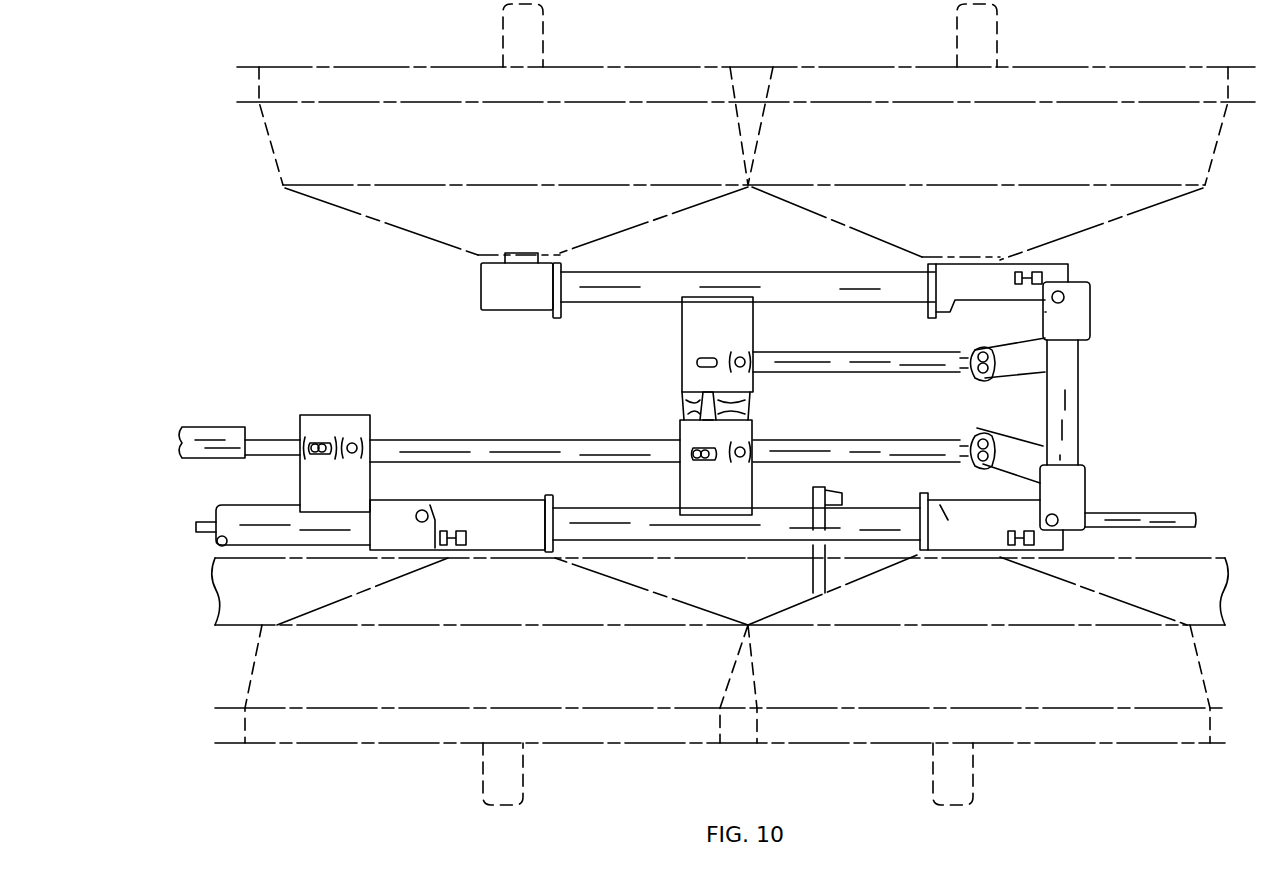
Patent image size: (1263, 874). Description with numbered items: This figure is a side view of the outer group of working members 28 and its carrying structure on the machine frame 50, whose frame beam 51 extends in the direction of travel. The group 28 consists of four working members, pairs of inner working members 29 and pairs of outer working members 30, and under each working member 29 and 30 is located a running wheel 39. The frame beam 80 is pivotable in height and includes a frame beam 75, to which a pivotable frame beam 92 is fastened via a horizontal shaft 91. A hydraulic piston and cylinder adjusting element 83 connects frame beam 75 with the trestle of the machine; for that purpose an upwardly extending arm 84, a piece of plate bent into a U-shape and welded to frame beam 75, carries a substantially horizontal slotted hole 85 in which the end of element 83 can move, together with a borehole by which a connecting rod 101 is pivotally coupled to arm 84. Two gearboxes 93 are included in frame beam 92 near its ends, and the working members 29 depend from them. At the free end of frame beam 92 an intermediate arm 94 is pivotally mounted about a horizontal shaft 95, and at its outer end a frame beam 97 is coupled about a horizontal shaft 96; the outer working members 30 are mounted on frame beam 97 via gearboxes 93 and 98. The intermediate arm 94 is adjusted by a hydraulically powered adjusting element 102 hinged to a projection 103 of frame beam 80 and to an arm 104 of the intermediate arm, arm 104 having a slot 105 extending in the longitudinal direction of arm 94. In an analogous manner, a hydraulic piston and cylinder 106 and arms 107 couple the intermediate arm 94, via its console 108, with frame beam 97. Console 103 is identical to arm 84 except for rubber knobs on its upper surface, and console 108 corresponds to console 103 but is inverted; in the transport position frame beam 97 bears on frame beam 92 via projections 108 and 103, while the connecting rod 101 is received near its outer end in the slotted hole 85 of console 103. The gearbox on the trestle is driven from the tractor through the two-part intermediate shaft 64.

The outer group of working members 28 is at (712, 62).
The inner working member 29 is at (395, 745).
The outer working member 30 is at (332, 195).
The running wheel 39 is at (502, 23).
The frame 50 is at (262, 612).
The frame beam 51 is at (1185, 608).
The intermediate shaft 64 is at (1180, 514).
The frame beam 75 is at (250, 514).
The frame beam 80 is at (605, 520).
The hydraulic piston and cylinder adjusting element 83 is at (213, 432).
The arm 84 is at (360, 414).
The slotted hole 85 is at (322, 440).
The horizontal shaft 91 is at (428, 508).
The pivotable frame beam 92 is at (745, 535).
The gearbox 93 is at (992, 270).
The intermediate arm 94 is at (1072, 423).
The horizontal shaft 95 is at (1060, 519).
The horizontal shaft 96 is at (1065, 297).
The frame beam 97 is at (687, 272).
The gearbox 98 is at (485, 292).
The connecting rod 101 is at (462, 440).
The adjusting element 102 is at (848, 450).
The projection 103 is at (755, 429).
The arm 104 is at (1012, 441).
The slot 105 is at (970, 380).
The hydraulic piston and cylinder 106 is at (857, 354).
The arm 107 is at (1018, 331).
The console 108 is at (693, 333).